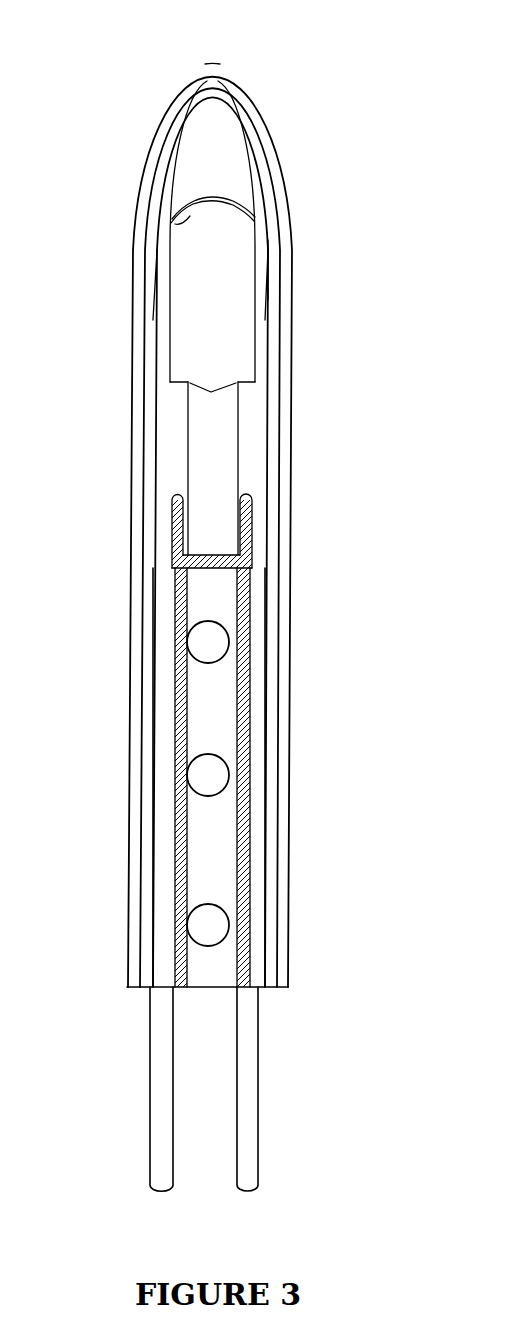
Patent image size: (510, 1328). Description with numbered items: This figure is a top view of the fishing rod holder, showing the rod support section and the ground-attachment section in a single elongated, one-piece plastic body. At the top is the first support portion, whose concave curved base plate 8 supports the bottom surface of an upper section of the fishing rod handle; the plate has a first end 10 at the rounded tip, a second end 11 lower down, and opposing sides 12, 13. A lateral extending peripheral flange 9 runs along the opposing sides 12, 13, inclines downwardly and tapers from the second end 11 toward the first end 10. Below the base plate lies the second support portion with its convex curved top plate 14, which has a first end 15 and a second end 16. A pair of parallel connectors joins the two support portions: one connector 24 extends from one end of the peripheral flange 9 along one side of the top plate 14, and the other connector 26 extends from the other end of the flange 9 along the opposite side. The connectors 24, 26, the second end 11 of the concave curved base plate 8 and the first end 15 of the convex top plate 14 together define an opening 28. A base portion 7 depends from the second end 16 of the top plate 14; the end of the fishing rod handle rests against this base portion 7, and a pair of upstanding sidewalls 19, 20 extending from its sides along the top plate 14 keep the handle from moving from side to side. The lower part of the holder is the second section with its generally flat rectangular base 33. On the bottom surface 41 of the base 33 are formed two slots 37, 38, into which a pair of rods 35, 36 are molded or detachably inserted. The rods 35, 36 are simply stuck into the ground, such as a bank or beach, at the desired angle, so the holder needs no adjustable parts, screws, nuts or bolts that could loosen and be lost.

The base portion 7 is at (213, 541).
The concave curved base plate 8 is at (220, 150).
The lateral extending peripheral flange 9 is at (153, 128).
The first end 10 is at (212, 78).
The second end 11 is at (180, 213).
The opposing side 12 is at (170, 165).
The opposing side 13 is at (253, 167).
The convex curved top plate 14 is at (220, 460).
The first end 15 is at (213, 387).
The second end 16 is at (177, 550).
The upstanding sidewall 19 is at (177, 518).
The upstanding sidewall 20 is at (250, 522).
The connector 24 is at (147, 293).
The connector 26 is at (275, 260).
The opening 28 is at (230, 288).
The base 33 is at (283, 742).
The rod 35 is at (150, 1073).
The rod 36 is at (258, 1073).
The slot 37 is at (153, 890).
The slot 38 is at (250, 893).
The bottom surface 41 is at (212, 842).